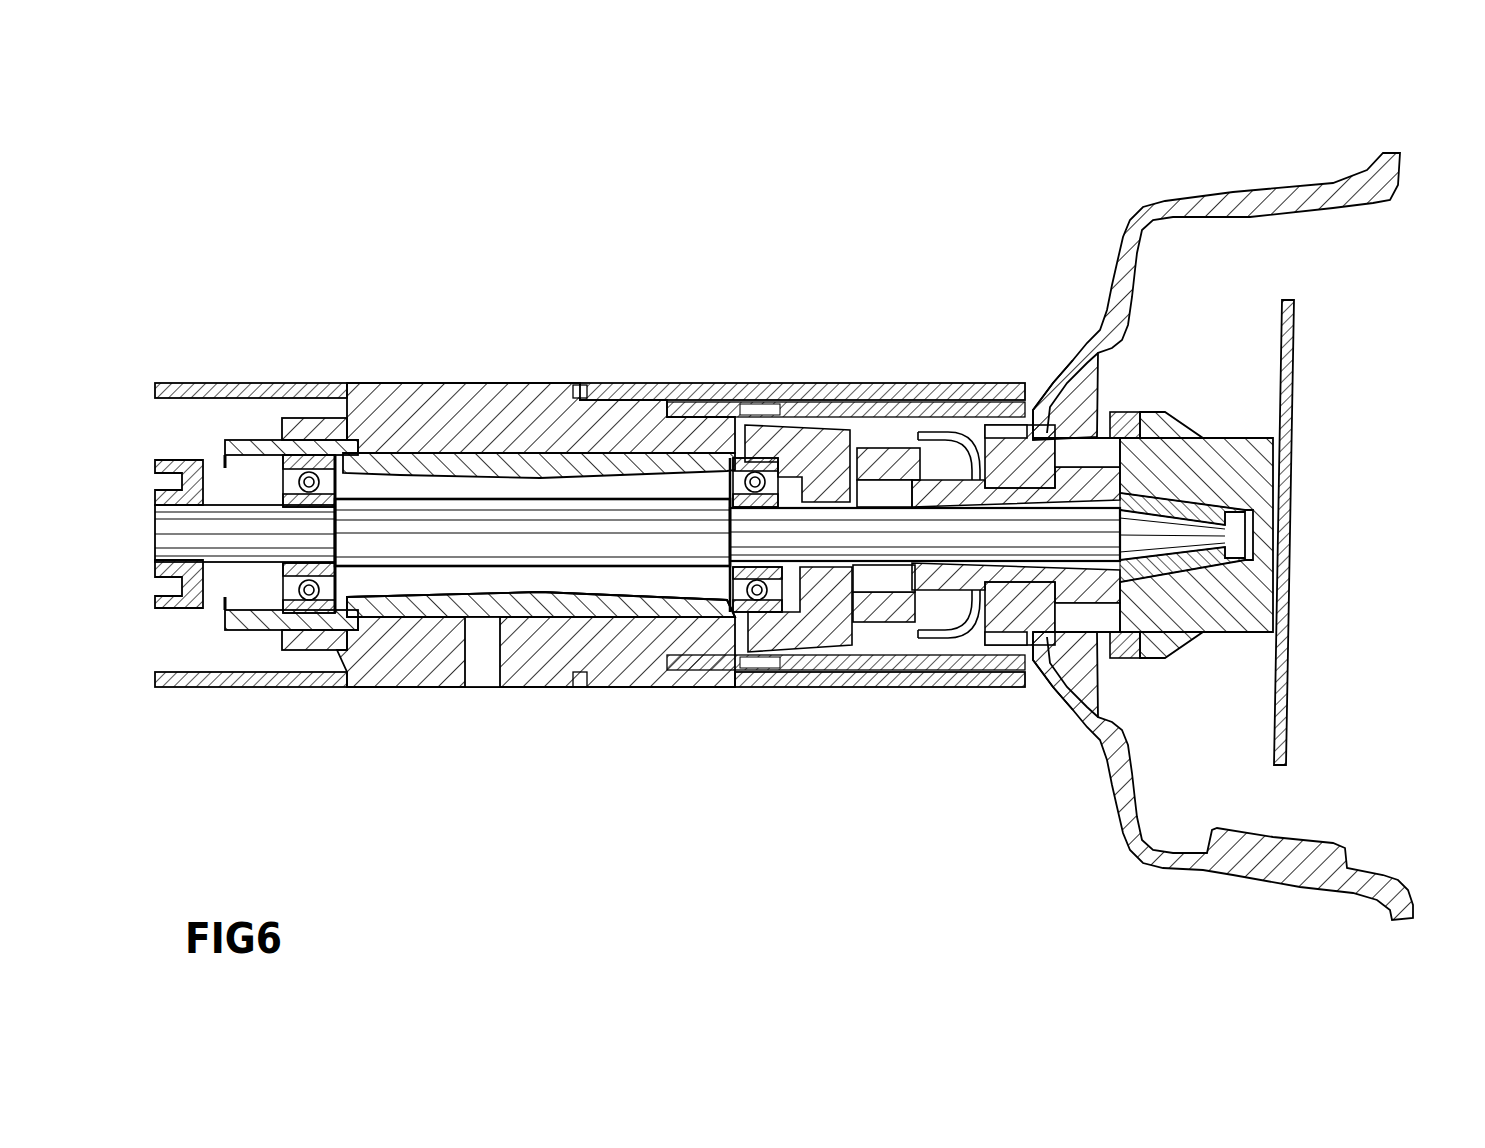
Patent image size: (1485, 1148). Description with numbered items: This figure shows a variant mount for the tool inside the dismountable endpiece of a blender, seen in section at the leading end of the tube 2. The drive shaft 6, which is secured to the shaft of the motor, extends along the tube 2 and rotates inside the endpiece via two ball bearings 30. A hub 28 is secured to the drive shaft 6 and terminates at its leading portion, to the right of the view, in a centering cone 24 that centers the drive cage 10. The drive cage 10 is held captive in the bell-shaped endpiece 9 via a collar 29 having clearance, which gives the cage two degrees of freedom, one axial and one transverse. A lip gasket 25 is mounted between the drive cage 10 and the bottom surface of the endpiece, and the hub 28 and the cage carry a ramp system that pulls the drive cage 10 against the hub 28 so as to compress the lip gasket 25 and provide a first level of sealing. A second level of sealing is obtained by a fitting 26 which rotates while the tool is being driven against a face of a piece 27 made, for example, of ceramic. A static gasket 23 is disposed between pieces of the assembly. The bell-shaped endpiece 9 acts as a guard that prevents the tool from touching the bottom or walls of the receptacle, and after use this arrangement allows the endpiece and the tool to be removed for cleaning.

The tube 2 is at (290, 688).
The drive shaft 6 is at (603, 523).
The bell-shaped endpiece 9 is at (1253, 208).
The drive cage 10 is at (1290, 422).
The static gasket 23 is at (578, 690).
The centering cone 24 is at (1298, 515).
The lip gasket 25 is at (1133, 413).
The fitting 26 is at (888, 618).
The piece 27 is at (853, 450).
The hub 28 is at (983, 400).
The collar 29 is at (1012, 430).
The ball bearings 30 is at (310, 475).